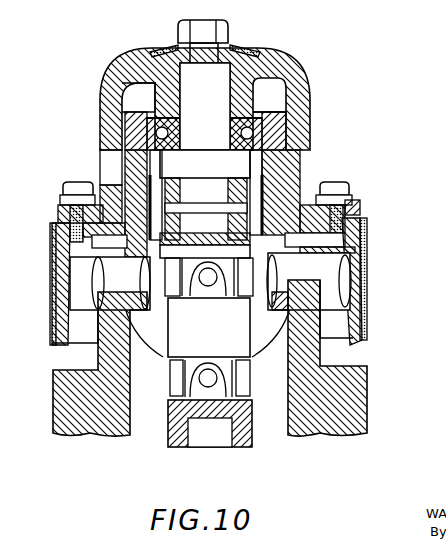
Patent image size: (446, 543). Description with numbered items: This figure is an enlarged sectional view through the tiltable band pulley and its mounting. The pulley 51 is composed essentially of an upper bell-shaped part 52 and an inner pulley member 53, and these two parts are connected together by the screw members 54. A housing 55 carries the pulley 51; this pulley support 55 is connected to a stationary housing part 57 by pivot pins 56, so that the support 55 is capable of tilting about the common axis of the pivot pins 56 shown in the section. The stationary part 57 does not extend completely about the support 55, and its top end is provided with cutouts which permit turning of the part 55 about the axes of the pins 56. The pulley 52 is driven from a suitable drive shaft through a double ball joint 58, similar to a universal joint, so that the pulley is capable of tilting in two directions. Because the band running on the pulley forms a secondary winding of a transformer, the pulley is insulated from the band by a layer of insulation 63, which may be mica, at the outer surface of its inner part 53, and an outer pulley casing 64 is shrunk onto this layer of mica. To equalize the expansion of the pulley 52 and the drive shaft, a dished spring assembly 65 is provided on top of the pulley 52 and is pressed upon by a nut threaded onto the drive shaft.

The pulley 51 is at (368, 250).
The upper bell-shaped part 52 is at (292, 73).
The inner pulley member 53 is at (373, 228).
The screw members 54 is at (338, 178).
The housing 55 is at (290, 117).
The pivot pins 56 is at (315, 266).
The stationary housing part 57 is at (352, 386).
The double ball joint 58 is at (238, 330).
The layer of insulation 63 is at (367, 331).
The outer pulley casing 64 is at (366, 289).
The dished spring assembly 65 is at (240, 45).